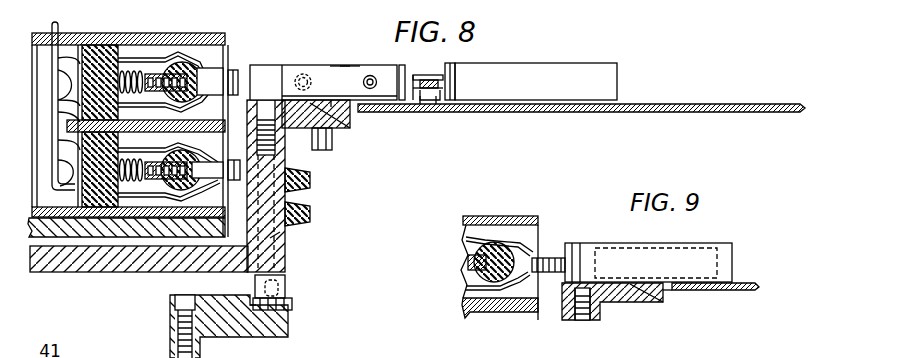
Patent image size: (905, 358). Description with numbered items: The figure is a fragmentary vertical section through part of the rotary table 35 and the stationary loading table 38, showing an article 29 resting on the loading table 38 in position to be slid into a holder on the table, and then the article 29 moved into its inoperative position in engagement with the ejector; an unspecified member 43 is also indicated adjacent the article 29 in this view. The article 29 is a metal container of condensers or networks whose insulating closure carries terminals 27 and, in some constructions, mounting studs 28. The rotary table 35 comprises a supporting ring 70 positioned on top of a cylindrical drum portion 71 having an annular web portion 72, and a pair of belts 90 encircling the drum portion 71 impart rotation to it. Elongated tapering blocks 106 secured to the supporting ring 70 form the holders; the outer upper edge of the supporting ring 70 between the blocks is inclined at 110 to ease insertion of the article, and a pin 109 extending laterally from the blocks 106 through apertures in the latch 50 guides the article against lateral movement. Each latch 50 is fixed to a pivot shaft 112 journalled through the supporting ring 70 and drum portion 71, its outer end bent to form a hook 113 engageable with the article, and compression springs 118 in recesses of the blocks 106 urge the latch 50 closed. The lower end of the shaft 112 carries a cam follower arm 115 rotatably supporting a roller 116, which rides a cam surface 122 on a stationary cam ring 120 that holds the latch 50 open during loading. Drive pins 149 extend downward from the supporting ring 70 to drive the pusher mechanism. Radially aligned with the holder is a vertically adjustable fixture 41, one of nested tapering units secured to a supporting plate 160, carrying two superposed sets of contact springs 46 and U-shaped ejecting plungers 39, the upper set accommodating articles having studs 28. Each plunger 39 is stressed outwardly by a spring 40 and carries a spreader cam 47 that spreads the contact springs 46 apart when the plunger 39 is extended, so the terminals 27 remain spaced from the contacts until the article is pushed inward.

In FIG. 8, the terminals 27 is at (420, 104).
In FIG. 9, the terminals 27 is at (550, 256).
In FIG. 8, the mounting studs 28 is at (436, 104).
In FIG. 8, the article 29 is at (568, 70).
In FIG. 8, the rotary table 35 is at (304, 250).
In FIG. 8, the stationary loading table 38 is at (675, 103).
In FIG. 9, the stationary loading table 38 is at (736, 283).
In FIG. 8, the ejecting plunger 39 is at (232, 70).
In FIG. 8, the spring 40 is at (140, 33).
In FIG. 8, the fixture 41 is at (88, 33).
In FIG. 9, the fixture 41 is at (495, 213).
In FIG. 9, the cover 43 is at (732, 243).
In FIG. 8, the contact springs 46 is at (165, 76).
In FIG. 9, the contact springs 46 is at (532, 245).
In FIG. 8, the spreader cam 47 is at (204, 75).
In FIG. 8, the latch 50 is at (335, 66).
In FIG. 8, the supporting ring 70 is at (315, 126).
In FIG. 9, the supporting ring 70 is at (628, 303).
In FIG. 8, the drum portion 71 is at (282, 232).
In FIG. 8, the web portion 72 is at (75, 272).
In FIG. 8, the belts 90 is at (310, 212).
In FIG. 8, the tapering blocks 106 is at (348, 66).
In FIG. 8, the pin 109 is at (371, 75).
In FIG. 8, the inclined edge 110 is at (331, 107).
In FIG. 9, the inclined edge 110 is at (660, 291).
In FIG. 8, the pivot shaft 112 is at (268, 72).
In FIG. 8, the hook 113 is at (417, 74).
In FIG. 8, the arm 115 is at (285, 285).
In FIG. 8, the roller 116 is at (292, 305).
In FIG. 8, the compression springs 118 is at (320, 76).
In FIG. 8, the cam ring 120 is at (236, 322).
In FIG. 8, the cam surface 122 is at (251, 299).
In FIG. 8, the drive pins 149 is at (332, 140).
In FIG. 8, the supporting plate 160 is at (107, 230).